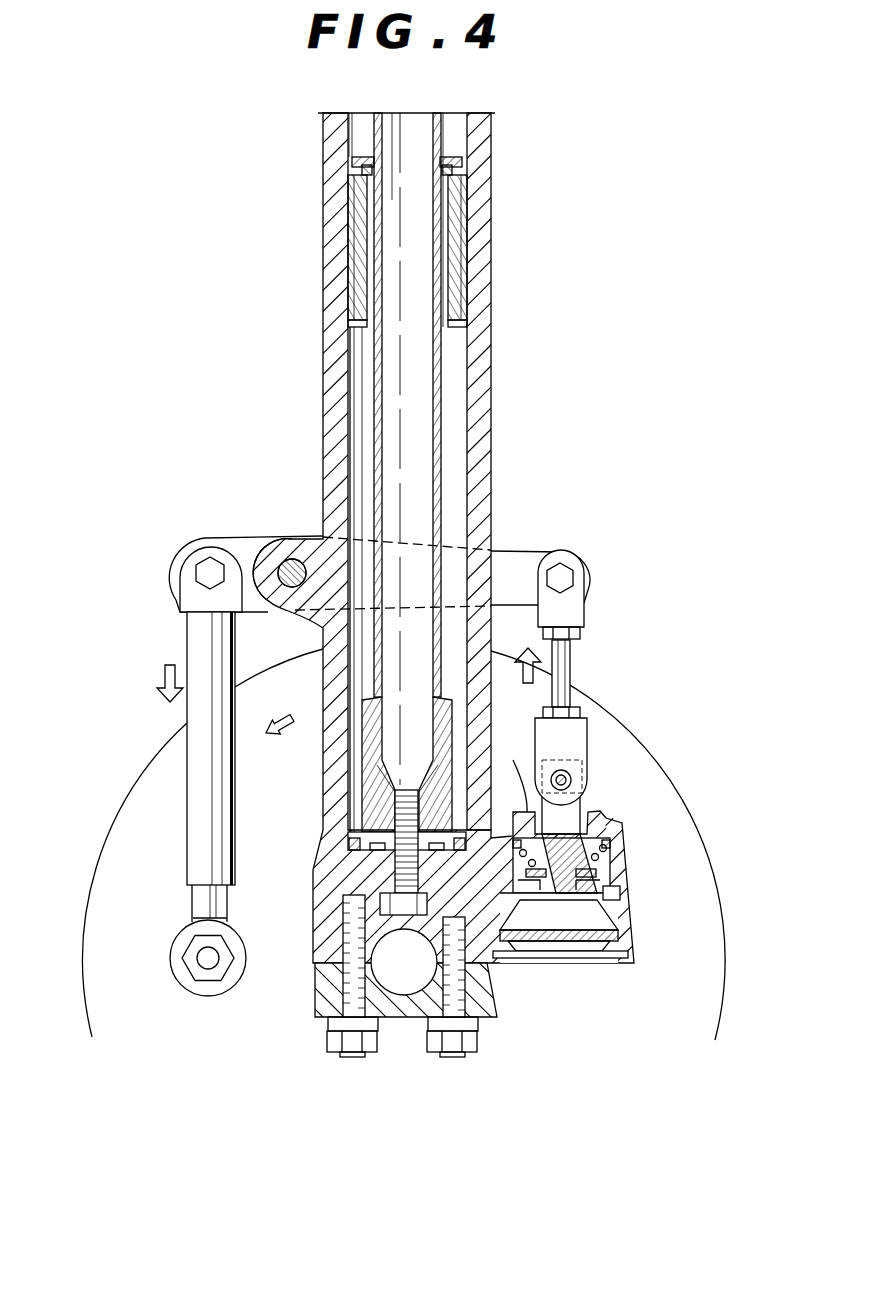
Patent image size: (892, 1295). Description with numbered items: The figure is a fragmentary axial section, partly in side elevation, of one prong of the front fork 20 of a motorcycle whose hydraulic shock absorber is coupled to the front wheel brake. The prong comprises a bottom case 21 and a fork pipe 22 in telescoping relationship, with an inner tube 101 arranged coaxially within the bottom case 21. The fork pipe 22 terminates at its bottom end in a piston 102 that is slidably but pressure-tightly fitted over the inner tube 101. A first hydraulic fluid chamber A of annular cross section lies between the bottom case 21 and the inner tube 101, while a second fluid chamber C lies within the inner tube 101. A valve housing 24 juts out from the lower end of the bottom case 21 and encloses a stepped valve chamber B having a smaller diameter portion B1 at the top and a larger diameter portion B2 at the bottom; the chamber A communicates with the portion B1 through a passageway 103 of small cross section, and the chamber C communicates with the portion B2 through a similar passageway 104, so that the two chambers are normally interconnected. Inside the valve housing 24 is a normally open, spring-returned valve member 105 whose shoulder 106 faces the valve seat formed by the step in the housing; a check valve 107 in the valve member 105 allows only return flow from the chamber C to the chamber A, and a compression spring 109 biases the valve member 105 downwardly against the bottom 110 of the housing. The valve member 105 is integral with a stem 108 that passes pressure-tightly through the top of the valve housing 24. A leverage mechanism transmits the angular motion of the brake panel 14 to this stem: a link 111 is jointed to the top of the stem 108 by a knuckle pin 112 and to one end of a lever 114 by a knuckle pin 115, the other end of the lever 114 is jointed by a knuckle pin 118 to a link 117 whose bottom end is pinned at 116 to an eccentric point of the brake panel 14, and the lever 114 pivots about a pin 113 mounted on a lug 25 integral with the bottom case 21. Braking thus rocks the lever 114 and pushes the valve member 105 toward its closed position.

The brake panel 14 is at (133, 816).
The front fork 20 is at (328, 223).
The bottom case 21 is at (478, 127).
The fork pipe 22 is at (470, 203).
The valve housing 24 is at (607, 818).
The lug 25 is at (290, 558).
The inner tube 101 is at (437, 340).
The piston 102 is at (362, 203).
The passageway 103 is at (393, 870).
The passageway 104 is at (380, 898).
The valve member 105 is at (553, 965).
The shoulder 106 is at (625, 890).
The check valve 107 is at (533, 965).
The stem 108 is at (634, 912).
The compression spring 109 is at (612, 858).
The bottom 110 is at (585, 965).
The link 111 is at (560, 655).
The knuckle pin 112 is at (586, 740).
The pin 113 is at (268, 560).
The lever 114 is at (505, 550).
The knuckle pin 115 is at (562, 572).
The pin 116 is at (206, 963).
The link 117 is at (197, 706).
The knuckle pin 118 is at (203, 575).
The first hydraulic fluid chamber A is at (458, 370).
The valve chamber B is at (511, 780).
The smaller diameter portion B1 is at (606, 852).
The larger diameter portion B2 is at (628, 905).
The second fluid chamber C is at (400, 363).